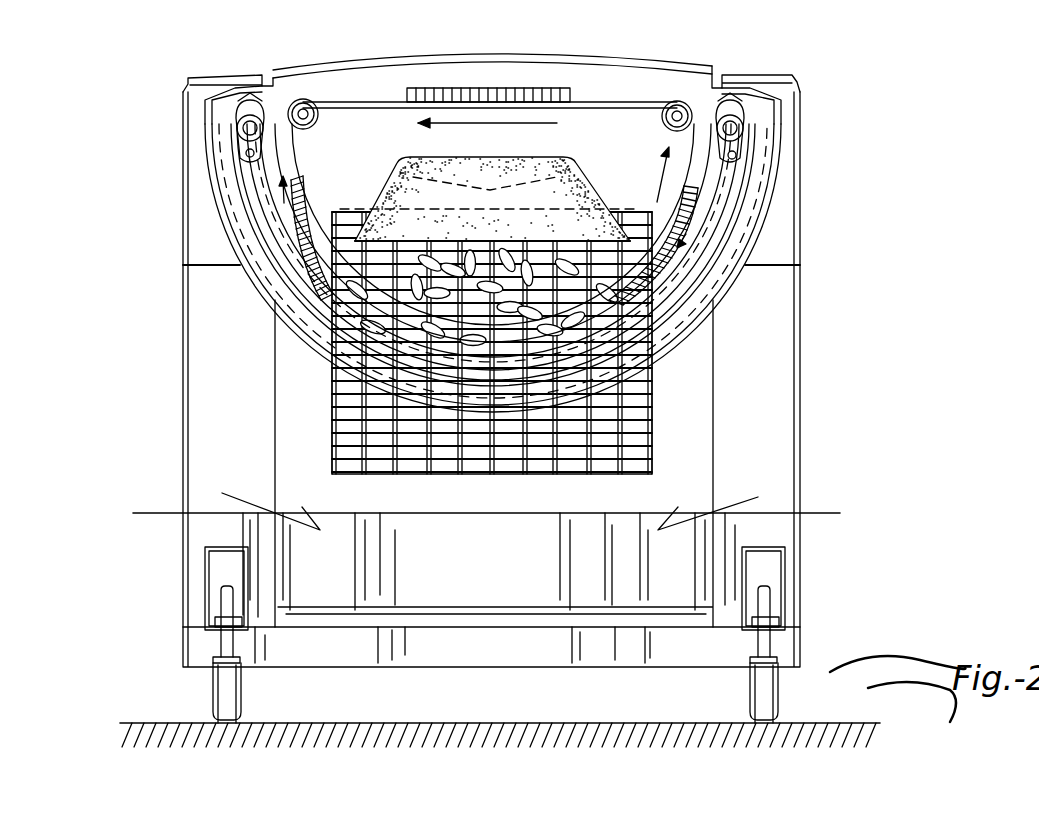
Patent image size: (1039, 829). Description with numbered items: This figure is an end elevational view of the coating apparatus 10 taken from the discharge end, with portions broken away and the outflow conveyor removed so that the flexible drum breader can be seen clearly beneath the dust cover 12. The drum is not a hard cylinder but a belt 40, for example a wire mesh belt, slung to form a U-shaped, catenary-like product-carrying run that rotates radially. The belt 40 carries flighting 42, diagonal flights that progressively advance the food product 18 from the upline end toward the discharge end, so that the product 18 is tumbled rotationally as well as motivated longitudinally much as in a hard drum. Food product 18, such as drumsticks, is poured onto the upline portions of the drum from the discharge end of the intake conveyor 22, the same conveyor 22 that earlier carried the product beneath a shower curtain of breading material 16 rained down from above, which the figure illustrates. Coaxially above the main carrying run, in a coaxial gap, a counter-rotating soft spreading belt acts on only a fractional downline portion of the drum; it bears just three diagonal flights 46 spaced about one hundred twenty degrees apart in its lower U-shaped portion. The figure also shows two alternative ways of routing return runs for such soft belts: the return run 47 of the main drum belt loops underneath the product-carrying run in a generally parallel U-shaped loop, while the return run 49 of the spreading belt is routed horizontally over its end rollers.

The coating apparatus 10 is at (111, 82).
The dust cover 12 is at (637, 64).
The breading material 16 is at (585, 203).
The food product 18 is at (535, 242).
The intake conveyor 22 is at (647, 447).
The belt 40 is at (278, 140).
The flighting 42 is at (305, 327).
The diagonal flights 46 is at (512, 88).
The return run 47 is at (283, 272).
The return run 49 is at (340, 112).